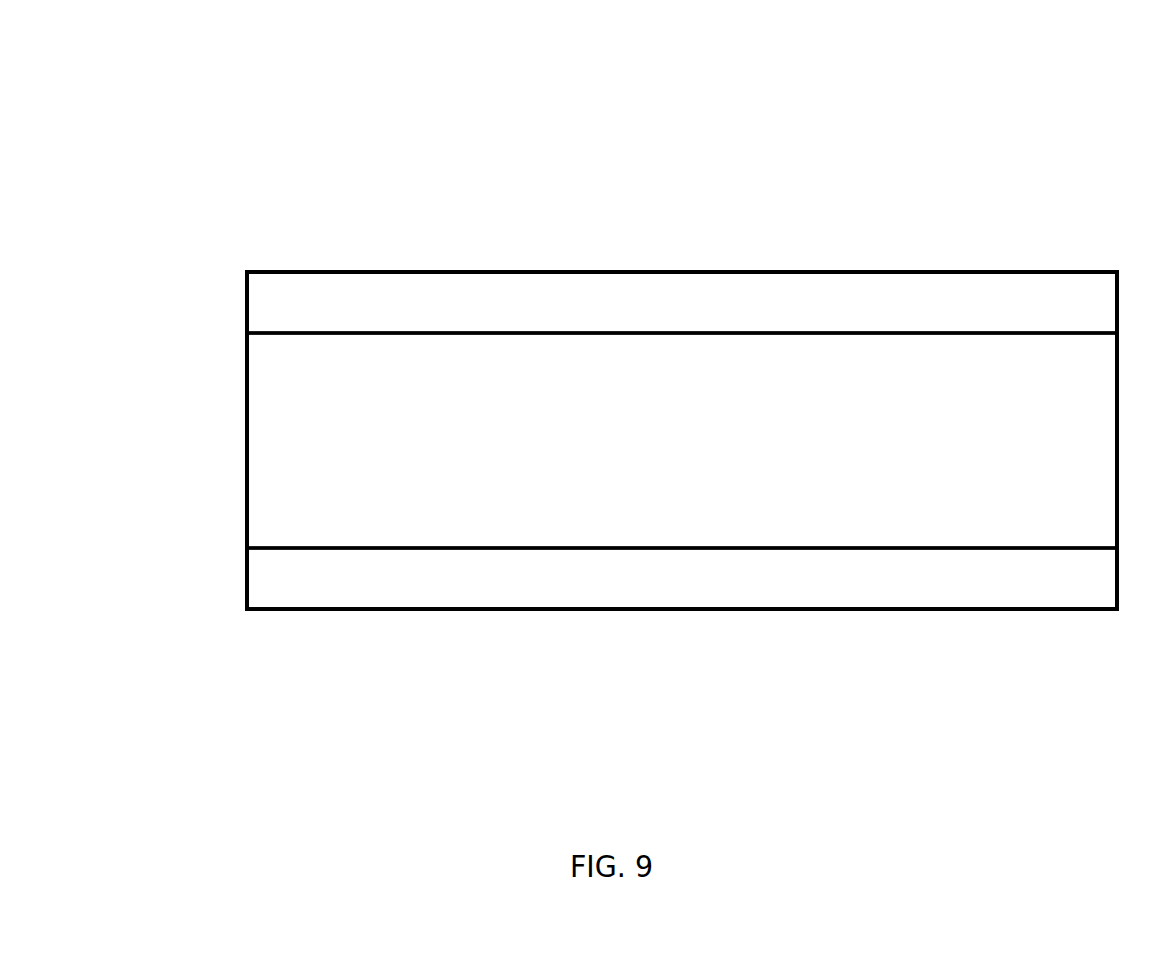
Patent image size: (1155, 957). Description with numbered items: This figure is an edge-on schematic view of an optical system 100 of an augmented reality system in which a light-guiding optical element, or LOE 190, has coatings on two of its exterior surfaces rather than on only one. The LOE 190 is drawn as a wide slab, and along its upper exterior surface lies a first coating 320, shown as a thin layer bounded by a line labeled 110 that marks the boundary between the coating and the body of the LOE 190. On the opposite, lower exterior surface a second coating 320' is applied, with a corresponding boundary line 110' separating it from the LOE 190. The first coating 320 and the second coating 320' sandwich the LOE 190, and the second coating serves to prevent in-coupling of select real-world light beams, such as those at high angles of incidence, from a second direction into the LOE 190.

The optical system 100 is at (279, 165).
The first coating 320 is at (624, 254).
The first interface layer 110 is at (618, 269).
The light-guiding optical element (LOE) 190 is at (277, 462).
The second interface layer 110' is at (622, 486).
The second outer layer 320' is at (627, 542).